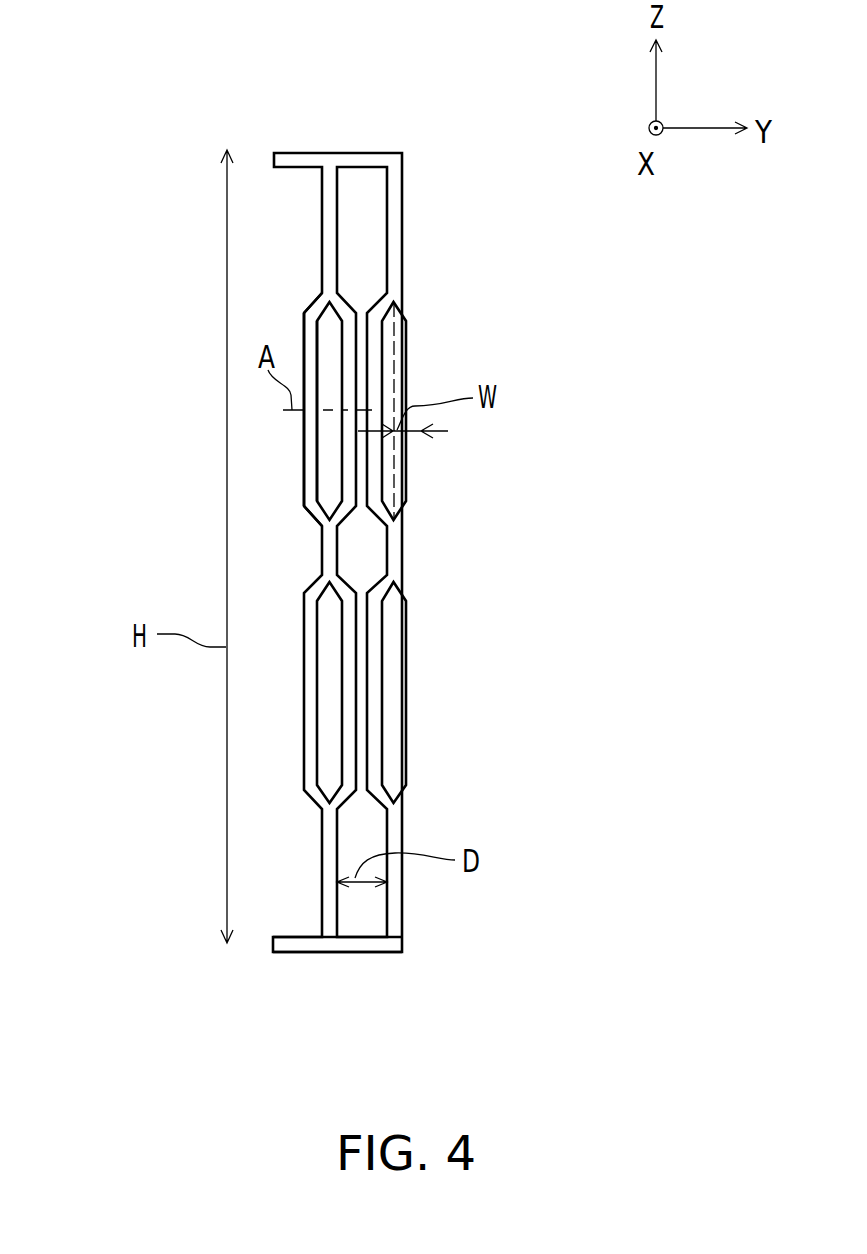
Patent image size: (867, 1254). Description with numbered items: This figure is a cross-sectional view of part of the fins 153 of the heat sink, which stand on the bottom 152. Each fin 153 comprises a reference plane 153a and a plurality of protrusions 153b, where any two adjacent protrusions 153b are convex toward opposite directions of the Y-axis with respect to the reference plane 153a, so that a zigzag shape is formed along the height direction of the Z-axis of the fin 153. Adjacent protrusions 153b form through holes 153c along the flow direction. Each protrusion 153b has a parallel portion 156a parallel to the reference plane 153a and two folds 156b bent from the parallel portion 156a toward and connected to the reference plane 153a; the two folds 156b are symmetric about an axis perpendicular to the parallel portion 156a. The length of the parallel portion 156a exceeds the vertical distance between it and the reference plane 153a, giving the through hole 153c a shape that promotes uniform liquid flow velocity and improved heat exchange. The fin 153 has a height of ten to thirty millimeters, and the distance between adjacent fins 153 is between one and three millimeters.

The bottom 152 is at (377, 952).
The fin 153 is at (402, 197).
The reference plane 153a is at (394, 356).
The protrusion 153b is at (413, 477).
The through hole 153c is at (395, 657).
The parallel portion 156a is at (303, 454).
The fold 156b is at (314, 303).